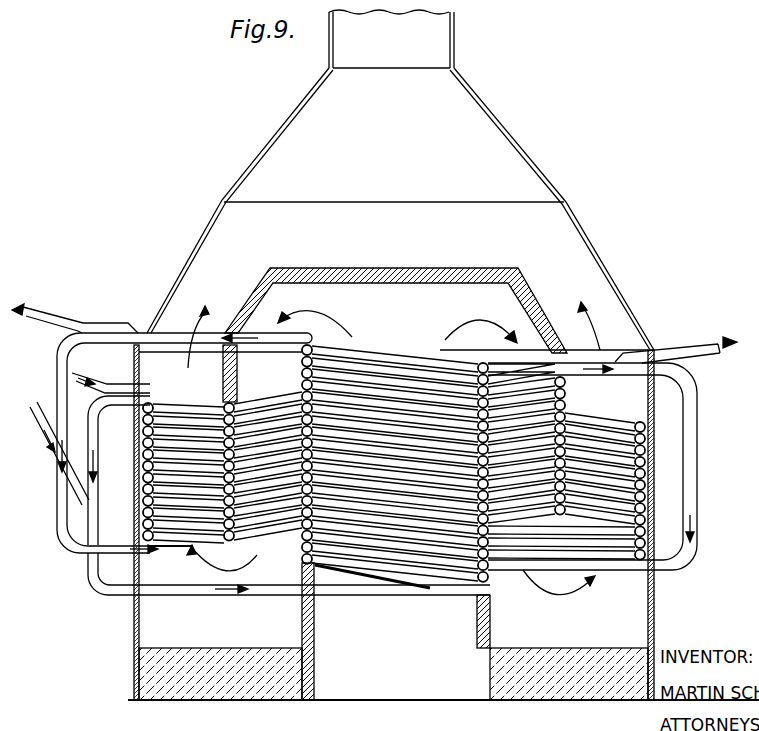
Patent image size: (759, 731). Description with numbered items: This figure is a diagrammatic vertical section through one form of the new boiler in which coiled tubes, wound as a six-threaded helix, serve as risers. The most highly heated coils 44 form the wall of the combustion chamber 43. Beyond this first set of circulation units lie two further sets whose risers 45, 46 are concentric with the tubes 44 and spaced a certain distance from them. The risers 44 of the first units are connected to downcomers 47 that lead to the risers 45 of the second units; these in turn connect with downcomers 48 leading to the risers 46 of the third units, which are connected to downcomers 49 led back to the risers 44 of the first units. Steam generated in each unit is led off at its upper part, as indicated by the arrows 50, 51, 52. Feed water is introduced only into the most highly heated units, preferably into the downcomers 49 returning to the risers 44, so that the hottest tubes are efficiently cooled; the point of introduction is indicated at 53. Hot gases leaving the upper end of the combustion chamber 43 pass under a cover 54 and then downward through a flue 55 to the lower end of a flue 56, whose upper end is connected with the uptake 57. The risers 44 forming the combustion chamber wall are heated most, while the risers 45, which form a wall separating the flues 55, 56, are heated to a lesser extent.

The combustion chamber 43 is at (343, 573).
The risers of the first circulation units 44 is at (473, 570).
The risers of the second circulation units 45 is at (238, 542).
The risers of the third circulation units 46 is at (138, 509).
The downcomers 47 is at (62, 387).
The downcomers 48 is at (697, 508).
The downcomers 49 is at (94, 430).
The steam outlet arrow 50 is at (48, 307).
The steam outlet arrow 51 is at (700, 346).
The steam outlet arrow 52 is at (90, 378).
The feed water introduction point 53 is at (55, 448).
The cover 54 is at (348, 243).
The flue 55 is at (262, 373).
The flue 56 is at (165, 370).
The uptake 57 is at (282, 133).